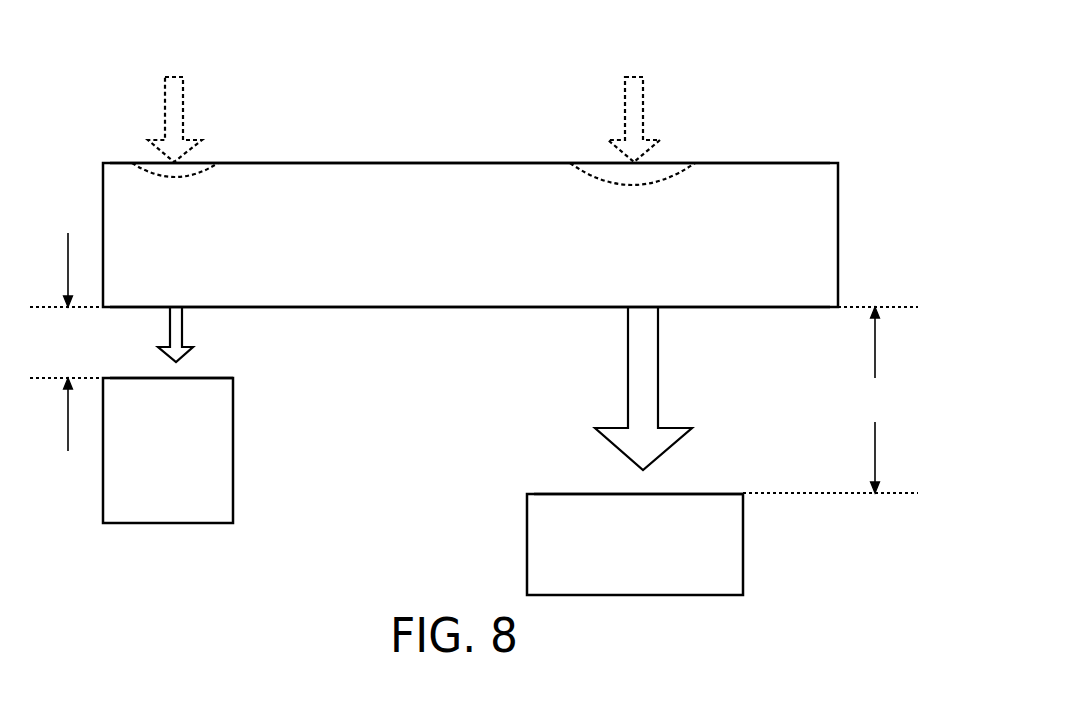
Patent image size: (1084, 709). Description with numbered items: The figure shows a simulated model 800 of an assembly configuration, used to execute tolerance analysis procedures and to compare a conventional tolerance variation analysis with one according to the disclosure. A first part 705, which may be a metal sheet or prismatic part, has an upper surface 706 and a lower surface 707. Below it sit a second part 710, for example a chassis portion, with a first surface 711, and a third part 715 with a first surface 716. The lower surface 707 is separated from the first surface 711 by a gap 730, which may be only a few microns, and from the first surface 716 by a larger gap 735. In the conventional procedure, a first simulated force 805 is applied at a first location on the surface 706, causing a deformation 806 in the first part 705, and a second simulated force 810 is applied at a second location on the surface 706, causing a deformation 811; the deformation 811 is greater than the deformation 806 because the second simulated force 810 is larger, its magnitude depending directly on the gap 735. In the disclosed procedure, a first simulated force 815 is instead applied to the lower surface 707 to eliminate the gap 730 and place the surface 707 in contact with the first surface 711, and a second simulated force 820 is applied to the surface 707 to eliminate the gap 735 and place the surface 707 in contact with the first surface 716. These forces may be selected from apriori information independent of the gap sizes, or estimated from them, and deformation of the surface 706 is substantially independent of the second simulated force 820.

The simulated model 800 is at (900, 52).
The first part 705 is at (470, 235).
The surface of the first part 706 is at (348, 158).
The surface of the first part 707 is at (310, 314).
The first simulated force 805 is at (184, 107).
The deformation 806 is at (202, 186).
The second simulated force 810 is at (644, 107).
The deformation 811 is at (672, 190).
The gap 730 is at (66, 342).
The gap 735 is at (830, 400).
The first simulated force 815 is at (169, 325).
The second part 710 is at (168, 450).
The first surface of the second part 711 is at (221, 370).
The second simulated force 820 is at (627, 368).
The third part 715 is at (635, 544).
The first surface of the third part 716 is at (718, 485).